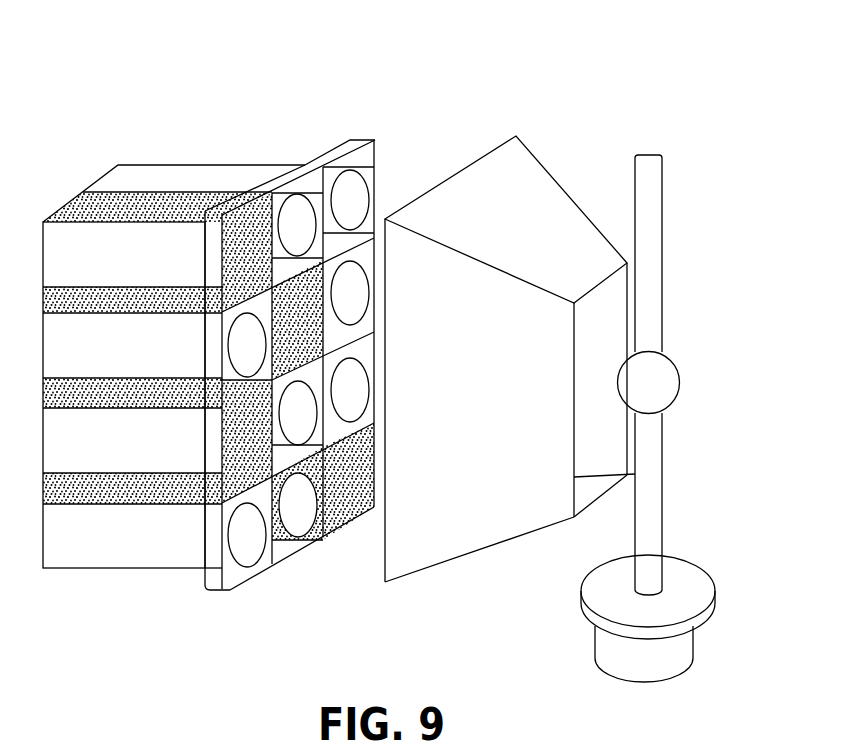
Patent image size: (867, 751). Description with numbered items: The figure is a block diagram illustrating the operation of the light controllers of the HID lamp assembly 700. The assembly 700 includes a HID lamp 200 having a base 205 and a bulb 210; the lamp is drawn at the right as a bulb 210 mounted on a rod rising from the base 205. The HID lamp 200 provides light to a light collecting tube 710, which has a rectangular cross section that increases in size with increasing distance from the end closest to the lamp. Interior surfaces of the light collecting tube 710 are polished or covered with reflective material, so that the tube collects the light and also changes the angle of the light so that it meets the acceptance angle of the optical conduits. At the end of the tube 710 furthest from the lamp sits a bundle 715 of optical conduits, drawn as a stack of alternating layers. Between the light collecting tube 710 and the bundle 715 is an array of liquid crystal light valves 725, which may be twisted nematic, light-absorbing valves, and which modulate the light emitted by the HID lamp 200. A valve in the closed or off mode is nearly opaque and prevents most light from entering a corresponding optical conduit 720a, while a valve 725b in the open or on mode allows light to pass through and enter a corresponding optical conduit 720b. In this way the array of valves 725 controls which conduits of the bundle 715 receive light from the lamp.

The HID lamp assembly 700 is at (485, 78).
The bundle of optical conduits 715 is at (97, 178).
The optical conduit 720a is at (143, 234).
The optical conduit 720b is at (258, 196).
The array of liquid crystal light valves 725 is at (377, 193).
The liquid crystal light valve 725b is at (243, 578).
The light collecting tube 710 is at (532, 155).
The HID lamp 200 is at (663, 505).
The bulb 210 is at (670, 358).
The base 205 is at (582, 600).